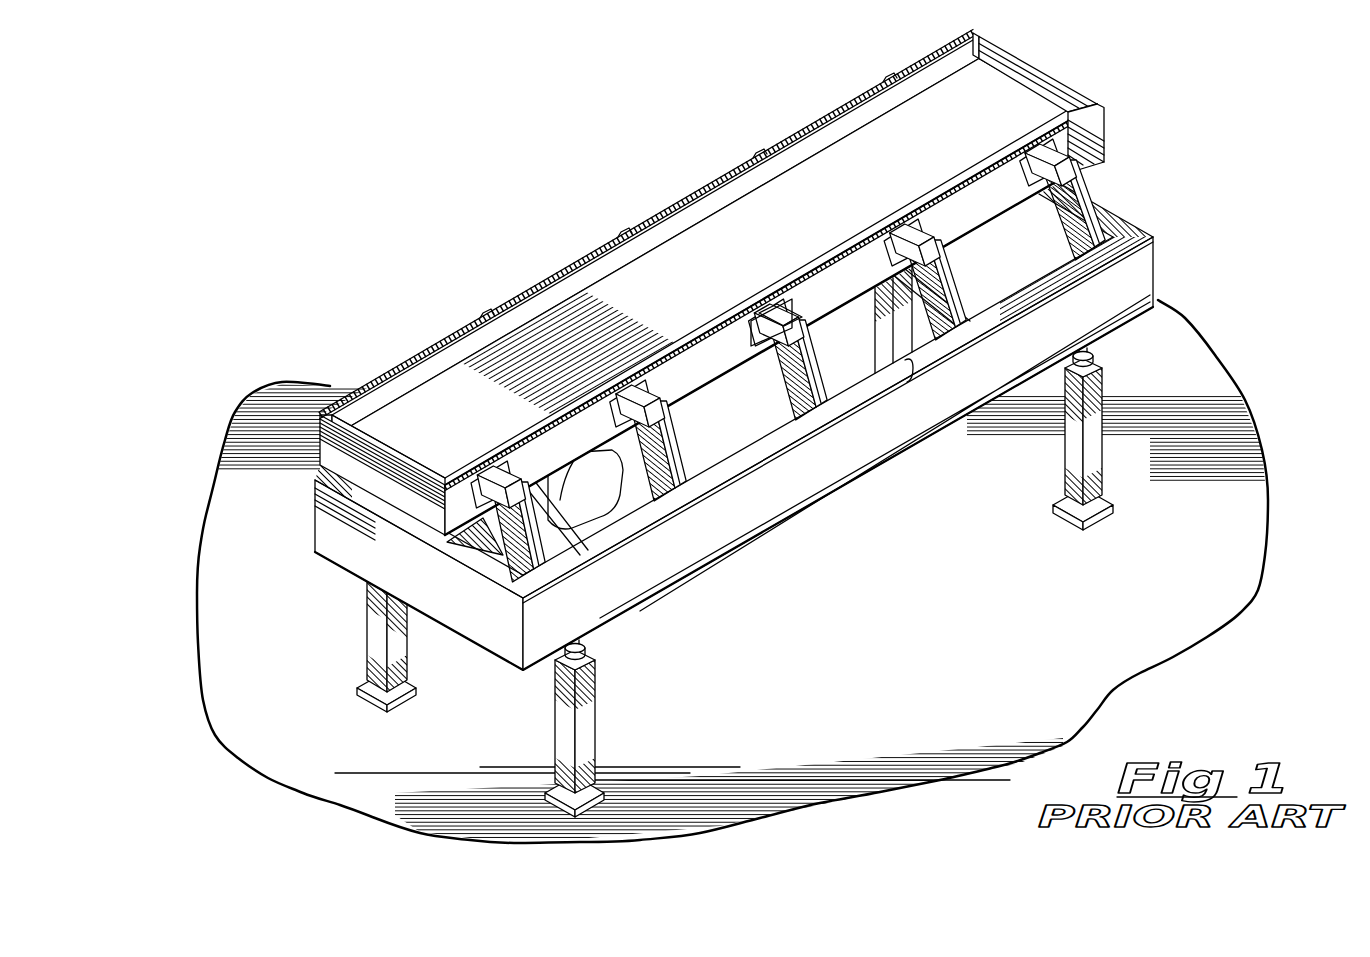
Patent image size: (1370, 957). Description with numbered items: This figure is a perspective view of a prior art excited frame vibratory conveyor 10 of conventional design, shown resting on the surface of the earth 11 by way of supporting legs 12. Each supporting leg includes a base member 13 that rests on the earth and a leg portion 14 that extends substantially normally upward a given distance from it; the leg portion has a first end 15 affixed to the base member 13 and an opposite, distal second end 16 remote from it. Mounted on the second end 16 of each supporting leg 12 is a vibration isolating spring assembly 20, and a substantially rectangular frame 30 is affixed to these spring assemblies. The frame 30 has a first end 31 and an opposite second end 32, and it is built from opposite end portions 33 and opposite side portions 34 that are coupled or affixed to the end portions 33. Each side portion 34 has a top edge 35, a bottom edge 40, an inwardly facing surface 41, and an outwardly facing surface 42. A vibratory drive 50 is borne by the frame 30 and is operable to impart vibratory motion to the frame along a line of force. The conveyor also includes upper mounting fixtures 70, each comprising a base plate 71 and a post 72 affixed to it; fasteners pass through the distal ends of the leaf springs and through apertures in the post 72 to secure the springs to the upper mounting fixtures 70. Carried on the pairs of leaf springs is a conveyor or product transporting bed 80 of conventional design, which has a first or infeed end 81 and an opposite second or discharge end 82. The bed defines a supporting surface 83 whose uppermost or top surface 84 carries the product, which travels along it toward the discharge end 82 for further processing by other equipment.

The prior art vibratory conveyor 10 is at (733, 458).
The surface of the earth 11 is at (962, 667).
The supporting legs 12 is at (747, 576).
The base member 13 is at (762, 687).
The leg portion 14 is at (765, 530).
The first end 15 is at (380, 692).
The second end 16 is at (1099, 383).
The vibration isolating spring assembly 20 is at (590, 640).
The frame 30 is at (752, 422).
The first end 31 is at (699, 422).
The second end 32 is at (752, 422).
The end portions 33 is at (464, 596).
The side portions 34 is at (735, 524).
The top edge 35 is at (910, 360).
The bottom edge 40 is at (699, 422).
The inwardly facing surface 41 is at (875, 380).
The outwardly facing surface 42 is at (1005, 367).
The vibratory drive 50 is at (597, 504).
The upper mounting fixtures 70 is at (789, 360).
The base plate 71 is at (751, 330).
The post 72 is at (770, 312).
The product transporting bed 80 is at (697, 283).
The infeed end 81 is at (383, 423).
The discharge end 82 is at (1003, 95).
The supporting surface 83 is at (452, 444).
The top surface 84 is at (952, 152).